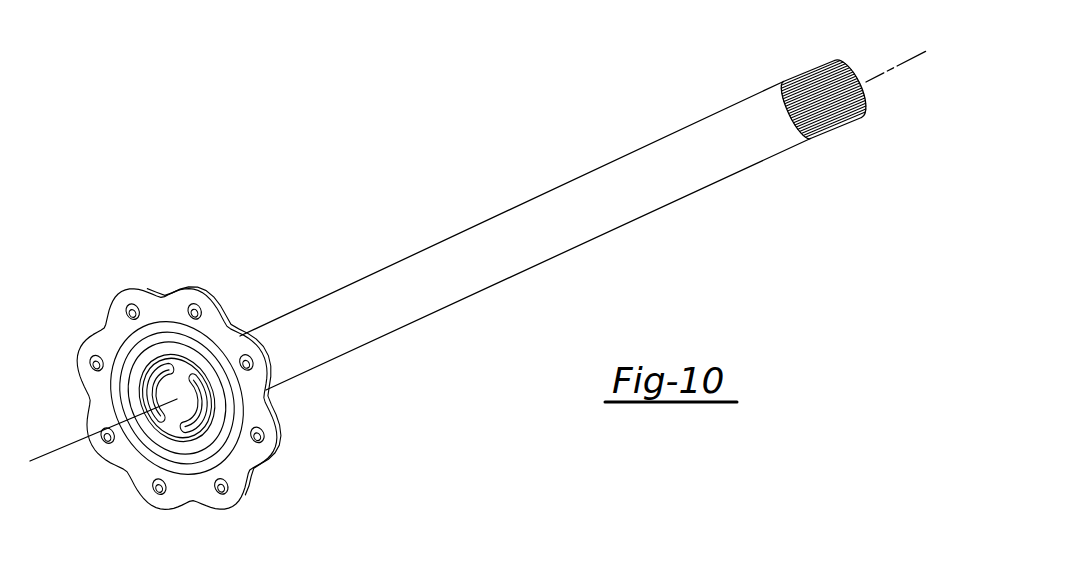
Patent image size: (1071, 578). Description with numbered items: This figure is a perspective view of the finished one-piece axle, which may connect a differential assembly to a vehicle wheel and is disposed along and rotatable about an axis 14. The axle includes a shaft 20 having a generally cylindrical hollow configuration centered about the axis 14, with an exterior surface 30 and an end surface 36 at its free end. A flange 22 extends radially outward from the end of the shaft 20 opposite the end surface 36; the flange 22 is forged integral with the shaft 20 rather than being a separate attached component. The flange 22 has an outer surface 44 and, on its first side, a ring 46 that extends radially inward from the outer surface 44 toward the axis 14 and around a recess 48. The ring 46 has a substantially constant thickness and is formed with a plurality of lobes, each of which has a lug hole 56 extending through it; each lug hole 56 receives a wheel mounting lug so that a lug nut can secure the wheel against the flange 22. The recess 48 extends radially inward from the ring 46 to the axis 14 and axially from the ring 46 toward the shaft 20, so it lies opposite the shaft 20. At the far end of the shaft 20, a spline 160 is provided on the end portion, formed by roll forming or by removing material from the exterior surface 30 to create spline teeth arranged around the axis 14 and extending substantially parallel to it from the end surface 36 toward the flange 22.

The axis 14 is at (62, 447).
The shaft 20 is at (525, 236).
The exterior surface 30 is at (532, 197).
The flange 22 is at (257, 374).
The outer surface 44 is at (267, 401).
The ring 46 is at (103, 405).
The recess 48 is at (170, 453).
The lug hole 56 is at (180, 310).
The spline 160 is at (813, 71).
The end surface 36 is at (873, 95).